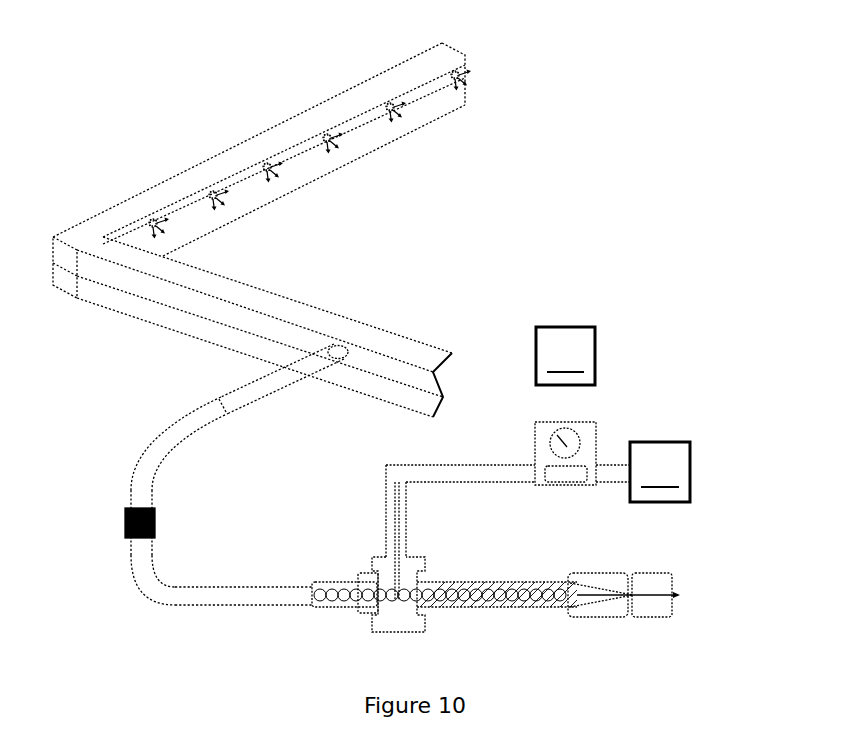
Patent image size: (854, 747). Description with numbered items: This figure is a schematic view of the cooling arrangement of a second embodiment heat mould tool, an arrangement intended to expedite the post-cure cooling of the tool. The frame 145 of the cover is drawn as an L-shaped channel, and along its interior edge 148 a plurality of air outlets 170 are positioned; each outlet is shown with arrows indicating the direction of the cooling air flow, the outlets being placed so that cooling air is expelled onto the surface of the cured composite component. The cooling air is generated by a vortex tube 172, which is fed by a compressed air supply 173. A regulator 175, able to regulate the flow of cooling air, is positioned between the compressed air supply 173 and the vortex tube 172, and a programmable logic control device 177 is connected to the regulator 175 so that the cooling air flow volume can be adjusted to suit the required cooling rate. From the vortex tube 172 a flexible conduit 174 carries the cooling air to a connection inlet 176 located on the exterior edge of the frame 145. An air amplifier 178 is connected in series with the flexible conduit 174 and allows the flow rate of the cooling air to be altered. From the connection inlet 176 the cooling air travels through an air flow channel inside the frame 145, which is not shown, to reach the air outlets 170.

The frame 145 is at (190, 128).
The interior edge 148 is at (298, 152).
The air outlets 170 is at (392, 106).
The vortex tube 172 is at (420, 617).
The compressed air supply 173 is at (660, 472).
The flexible conduit 174 is at (167, 593).
The regulator 175 is at (592, 431).
The connection inlet 176 is at (346, 348).
The programmable logic control device 177 is at (566, 422).
The air amplifier 178 is at (126, 523).